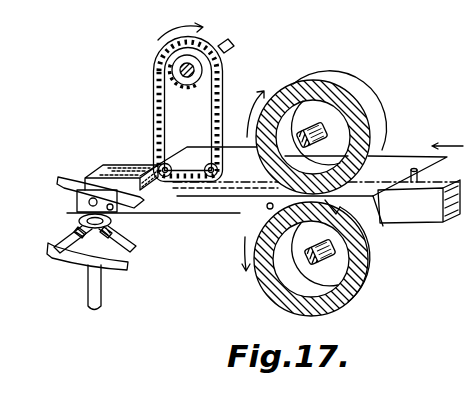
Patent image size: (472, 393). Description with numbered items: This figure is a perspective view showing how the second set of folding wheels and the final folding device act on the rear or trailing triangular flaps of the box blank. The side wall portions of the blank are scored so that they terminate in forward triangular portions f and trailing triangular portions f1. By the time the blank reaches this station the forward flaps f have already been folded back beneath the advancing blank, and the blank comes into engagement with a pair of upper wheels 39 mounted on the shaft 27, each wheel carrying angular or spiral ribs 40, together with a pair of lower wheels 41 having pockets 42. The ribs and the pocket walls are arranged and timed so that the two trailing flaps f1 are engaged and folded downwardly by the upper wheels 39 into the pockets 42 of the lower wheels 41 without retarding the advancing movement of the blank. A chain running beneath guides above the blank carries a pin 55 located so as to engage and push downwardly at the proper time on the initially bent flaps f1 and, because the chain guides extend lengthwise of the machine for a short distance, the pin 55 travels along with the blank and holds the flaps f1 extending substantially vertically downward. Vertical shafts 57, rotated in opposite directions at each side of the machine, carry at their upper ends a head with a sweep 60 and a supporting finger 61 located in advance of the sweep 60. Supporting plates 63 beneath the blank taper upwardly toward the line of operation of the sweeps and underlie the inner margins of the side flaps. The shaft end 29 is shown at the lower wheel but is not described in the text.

The pin 55 is at (234, 43).
The shaft 27 is at (309, 122).
The upper wheels 39 is at (368, 100).
The spiral ribs 40 is at (393, 152).
The supporting plates 63 is at (53, 182).
The supporting finger 61 is at (133, 250).
The sweep 60 is at (125, 270).
The vertical shafts 57 is at (102, 288).
The triangular portions f is at (184, 200).
The triangular portions f1 is at (383, 227).
The pockets 42 is at (315, 243).
The lower roller shaft 29 is at (321, 260).
The lower wheels 41 is at (387, 267).